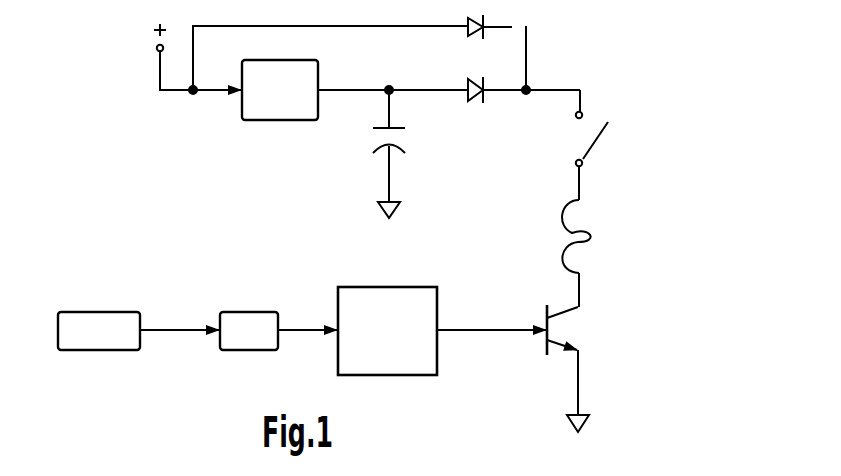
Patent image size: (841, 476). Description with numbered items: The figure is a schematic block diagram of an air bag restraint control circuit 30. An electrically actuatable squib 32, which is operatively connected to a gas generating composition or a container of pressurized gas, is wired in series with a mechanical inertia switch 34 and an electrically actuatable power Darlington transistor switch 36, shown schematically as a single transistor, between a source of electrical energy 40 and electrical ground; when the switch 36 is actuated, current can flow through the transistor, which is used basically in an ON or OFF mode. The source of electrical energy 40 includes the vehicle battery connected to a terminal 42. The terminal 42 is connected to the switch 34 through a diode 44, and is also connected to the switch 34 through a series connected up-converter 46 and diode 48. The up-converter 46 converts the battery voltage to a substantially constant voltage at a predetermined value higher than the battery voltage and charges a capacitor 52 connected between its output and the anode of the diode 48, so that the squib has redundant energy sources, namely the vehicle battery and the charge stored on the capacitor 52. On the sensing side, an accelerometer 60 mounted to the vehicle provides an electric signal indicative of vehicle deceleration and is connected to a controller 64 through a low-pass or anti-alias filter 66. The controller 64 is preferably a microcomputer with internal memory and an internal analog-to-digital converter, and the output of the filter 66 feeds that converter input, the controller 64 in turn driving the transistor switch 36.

The air bag restraint control circuit 30 is at (645, 140).
The electrically actuatable squib 32 is at (563, 234).
The mechanical inertia switch 34 is at (587, 139).
The power Darlington transistor switch 36 is at (580, 333).
The source of electrical energy 40 is at (560, 24).
The terminal 42 is at (157, 48).
The diode 44 is at (477, 34).
The up-converter 46 is at (267, 121).
The diode 48 is at (478, 102).
The capacitor 52 is at (373, 137).
The accelerometer 60 is at (117, 311).
The controller 64 is at (392, 296).
The low-pass filter 66 is at (245, 311).